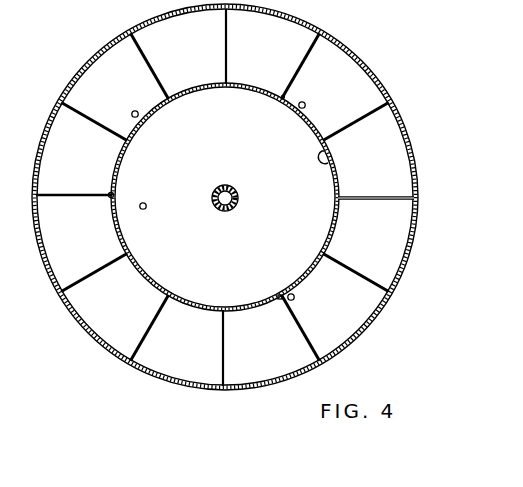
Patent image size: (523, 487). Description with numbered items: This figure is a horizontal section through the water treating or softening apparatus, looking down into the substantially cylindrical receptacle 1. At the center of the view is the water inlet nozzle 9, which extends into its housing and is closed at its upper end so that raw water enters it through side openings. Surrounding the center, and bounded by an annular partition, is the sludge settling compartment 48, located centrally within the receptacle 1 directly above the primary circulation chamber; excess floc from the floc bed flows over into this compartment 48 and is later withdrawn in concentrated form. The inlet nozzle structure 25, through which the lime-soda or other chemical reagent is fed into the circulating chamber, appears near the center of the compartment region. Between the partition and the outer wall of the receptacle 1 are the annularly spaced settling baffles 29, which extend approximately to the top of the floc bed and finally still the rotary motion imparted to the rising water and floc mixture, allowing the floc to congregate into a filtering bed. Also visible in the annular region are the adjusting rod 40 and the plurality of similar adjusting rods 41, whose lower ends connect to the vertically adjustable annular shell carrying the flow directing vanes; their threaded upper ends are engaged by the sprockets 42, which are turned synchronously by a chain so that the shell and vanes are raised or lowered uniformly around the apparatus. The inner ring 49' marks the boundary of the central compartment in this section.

The receptacle 1 is at (406, 272).
The water inlet nozzle 9 is at (236, 189).
The inlet nozzle structure 25 is at (146, 204).
The settling baffles 29 is at (388, 200).
The adjusting rod 40 is at (135, 111).
The adjusting rods 41 is at (305, 103).
The sprockets 42 is at (294, 296).
The sludge settling compartment 48 is at (328, 163).
The inner ring 49' is at (225, 197).